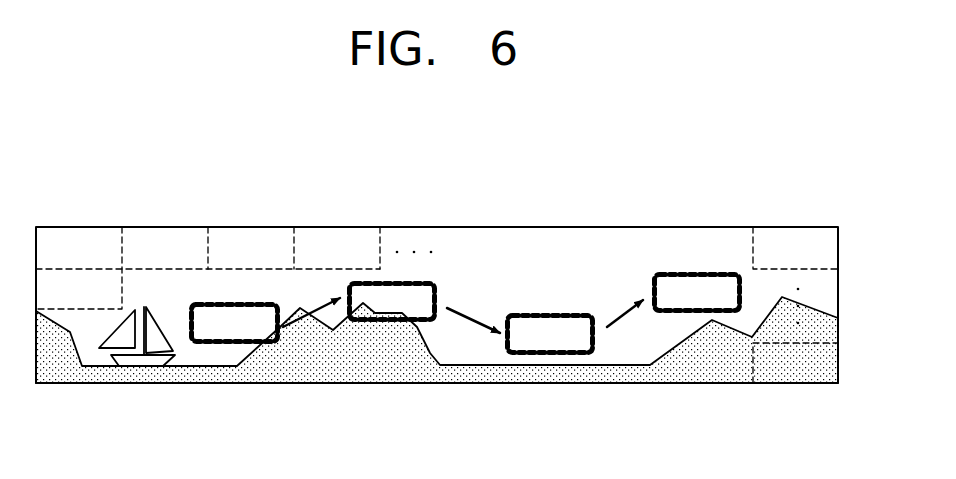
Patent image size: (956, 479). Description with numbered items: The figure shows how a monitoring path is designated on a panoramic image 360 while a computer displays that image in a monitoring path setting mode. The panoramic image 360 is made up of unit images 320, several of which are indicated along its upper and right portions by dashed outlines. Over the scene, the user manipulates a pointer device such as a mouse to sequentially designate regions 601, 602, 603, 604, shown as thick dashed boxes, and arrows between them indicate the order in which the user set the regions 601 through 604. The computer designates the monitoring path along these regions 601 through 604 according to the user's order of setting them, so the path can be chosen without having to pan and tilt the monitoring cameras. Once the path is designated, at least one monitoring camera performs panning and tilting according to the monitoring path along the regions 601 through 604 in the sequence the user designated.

The panoramic image 360 is at (627, 207).
The unit images 320 is at (82, 238).
The region 601 is at (232, 344).
The region 602 is at (392, 322).
The region 603 is at (550, 355).
The region 604 is at (695, 313).